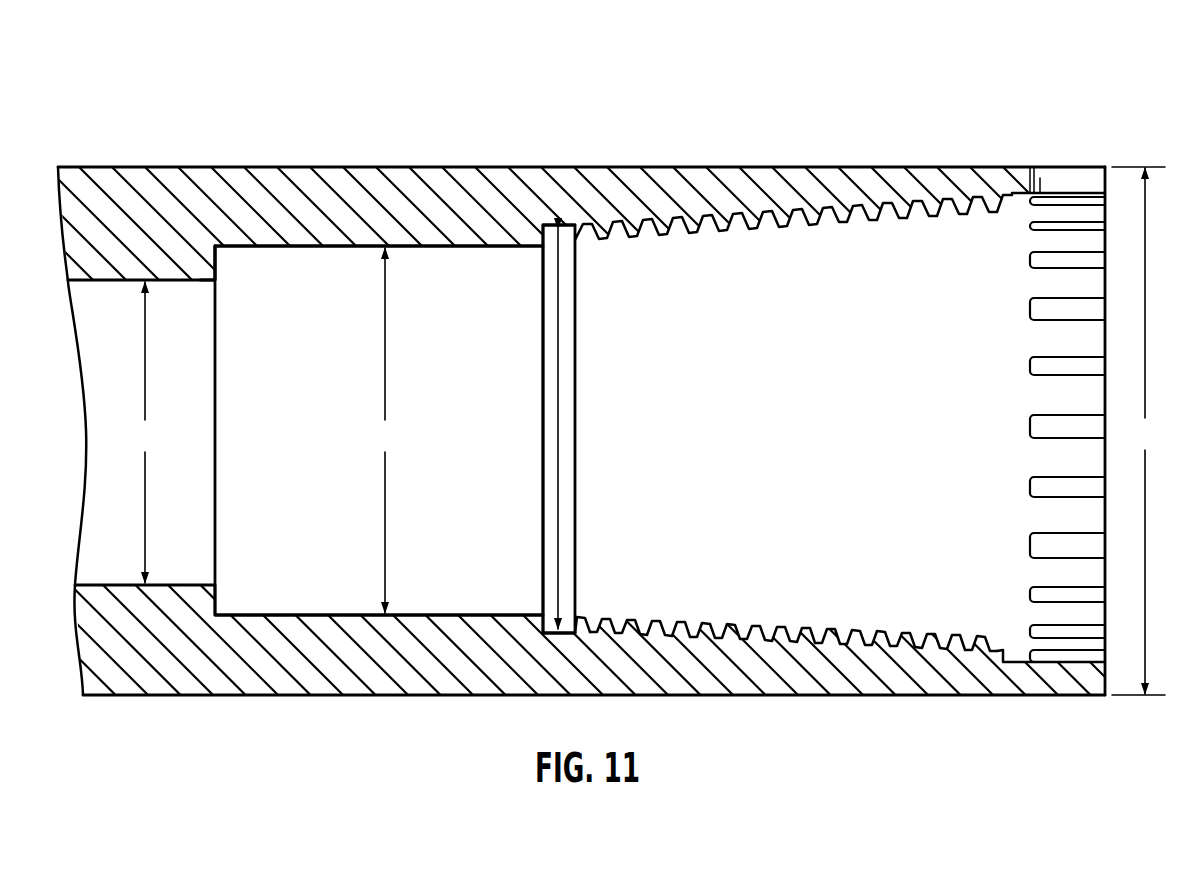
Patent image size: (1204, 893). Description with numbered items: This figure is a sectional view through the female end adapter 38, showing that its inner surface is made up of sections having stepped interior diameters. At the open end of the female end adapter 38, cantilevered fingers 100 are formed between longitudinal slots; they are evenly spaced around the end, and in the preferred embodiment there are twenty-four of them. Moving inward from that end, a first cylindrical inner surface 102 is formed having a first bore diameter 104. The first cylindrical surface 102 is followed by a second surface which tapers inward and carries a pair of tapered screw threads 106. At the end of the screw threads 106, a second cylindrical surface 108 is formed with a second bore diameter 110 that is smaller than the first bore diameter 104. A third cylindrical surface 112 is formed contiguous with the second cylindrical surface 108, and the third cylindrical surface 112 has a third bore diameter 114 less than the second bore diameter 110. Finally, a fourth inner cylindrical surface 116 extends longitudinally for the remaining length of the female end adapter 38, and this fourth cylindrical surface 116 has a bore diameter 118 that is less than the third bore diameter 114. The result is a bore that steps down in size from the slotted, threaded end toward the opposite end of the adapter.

The female end adapter 38 is at (990, 152).
The cantilevered fingers 100 is at (1045, 395).
The first cylindrical inner surface 102 is at (1003, 660).
The first bore diameter 104 is at (1139, 431).
The tapered screw threads 106 is at (776, 625).
The second cylindrical surface 108 is at (575, 617).
The second bore diameter 110 is at (560, 442).
The third cylindrical surface 112 is at (307, 614).
The third bore diameter 114 is at (385, 430).
The fourth inner cylindrical surface 116 is at (197, 287).
The bore diameter 118 is at (143, 432).